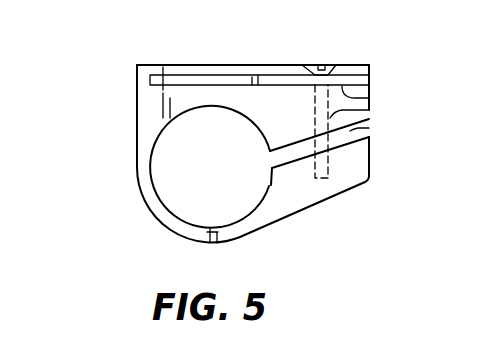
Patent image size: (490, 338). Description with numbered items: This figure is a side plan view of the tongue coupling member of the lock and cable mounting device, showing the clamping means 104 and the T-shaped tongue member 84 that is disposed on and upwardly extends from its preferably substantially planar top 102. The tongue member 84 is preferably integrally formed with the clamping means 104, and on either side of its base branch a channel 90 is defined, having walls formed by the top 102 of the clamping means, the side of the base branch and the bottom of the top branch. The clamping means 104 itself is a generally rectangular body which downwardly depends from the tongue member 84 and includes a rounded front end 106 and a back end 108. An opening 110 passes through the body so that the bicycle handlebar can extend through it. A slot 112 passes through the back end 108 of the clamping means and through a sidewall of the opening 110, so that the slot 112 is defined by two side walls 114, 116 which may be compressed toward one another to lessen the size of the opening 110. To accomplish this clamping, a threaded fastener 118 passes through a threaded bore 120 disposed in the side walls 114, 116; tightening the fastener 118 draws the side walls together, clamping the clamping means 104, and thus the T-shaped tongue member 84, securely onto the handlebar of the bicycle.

The T-shaped tongue member 84 is at (337, 70).
The channel 90 is at (352, 81).
The top 102 is at (193, 85).
The clamping means 104 is at (157, 109).
The rounded front end 106 is at (143, 206).
The back end 108 is at (370, 160).
The opening 110 is at (187, 205).
The slot 112 is at (365, 131).
The side wall 114 is at (300, 121).
The side wall 116 is at (312, 200).
The threaded fastener 118 is at (369, 97).
The threaded bore 120 is at (372, 110).